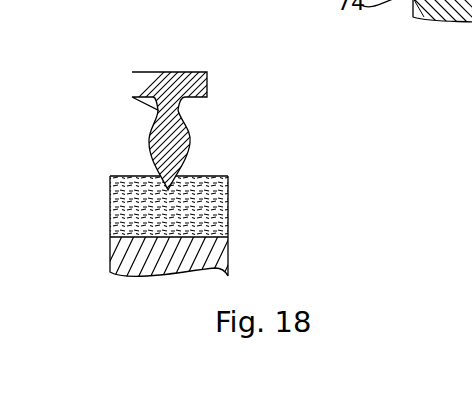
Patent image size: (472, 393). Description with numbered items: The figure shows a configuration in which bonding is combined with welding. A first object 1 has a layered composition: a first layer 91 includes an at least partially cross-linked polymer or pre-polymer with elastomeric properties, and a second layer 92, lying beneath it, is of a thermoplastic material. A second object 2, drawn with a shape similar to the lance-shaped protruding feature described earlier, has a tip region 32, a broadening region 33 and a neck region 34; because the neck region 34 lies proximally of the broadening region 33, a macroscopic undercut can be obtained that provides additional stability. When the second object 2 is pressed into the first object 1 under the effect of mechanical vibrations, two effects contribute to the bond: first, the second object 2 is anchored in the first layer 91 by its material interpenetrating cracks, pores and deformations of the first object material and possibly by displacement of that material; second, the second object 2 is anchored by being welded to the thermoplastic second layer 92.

The first object 1 is at (182, 229).
The second object 2 is at (178, 104).
The tip region 32 is at (182, 166).
The broadening region 33 is at (150, 151).
The neck region 34 is at (180, 113).
The first layer 91 is at (110, 190).
The second layer 92 is at (222, 262).